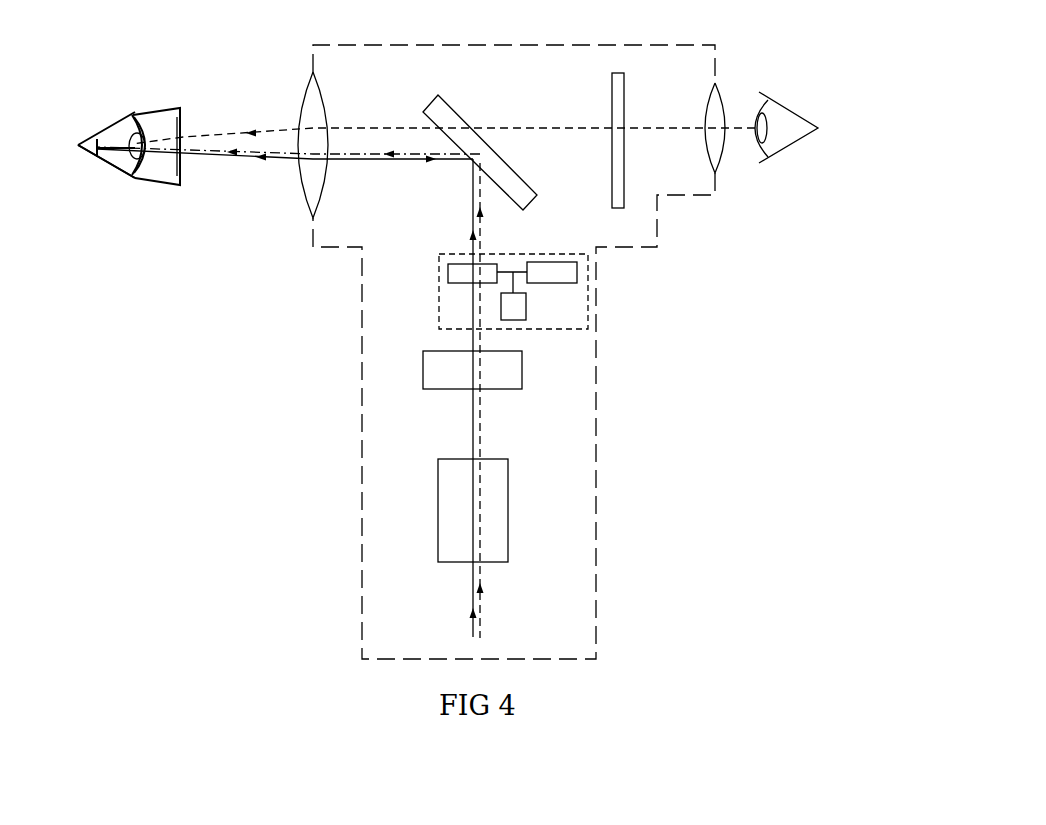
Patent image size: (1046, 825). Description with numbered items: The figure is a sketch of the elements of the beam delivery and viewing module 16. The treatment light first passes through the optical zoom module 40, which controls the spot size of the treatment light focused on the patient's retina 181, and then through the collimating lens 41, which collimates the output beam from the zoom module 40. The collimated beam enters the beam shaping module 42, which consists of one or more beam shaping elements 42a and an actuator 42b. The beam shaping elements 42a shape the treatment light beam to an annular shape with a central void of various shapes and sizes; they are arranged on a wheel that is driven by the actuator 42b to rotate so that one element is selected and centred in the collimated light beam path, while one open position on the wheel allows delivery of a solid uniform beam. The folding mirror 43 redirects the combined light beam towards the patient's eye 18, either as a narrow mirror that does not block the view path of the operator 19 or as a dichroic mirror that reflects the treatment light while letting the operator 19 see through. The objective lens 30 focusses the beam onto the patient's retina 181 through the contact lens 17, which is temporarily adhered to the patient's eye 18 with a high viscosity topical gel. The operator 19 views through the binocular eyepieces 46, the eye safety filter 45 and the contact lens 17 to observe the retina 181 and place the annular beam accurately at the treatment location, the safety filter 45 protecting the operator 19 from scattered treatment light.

The beam delivery and viewing module 16 is at (376, 460).
The contact lens 17 is at (187, 113).
The patient's eye 18 is at (110, 132).
The patient's retina 181 is at (107, 180).
The operator 19 is at (790, 157).
The objective lens 30 is at (320, 85).
The optical zoom module 40 is at (508, 548).
The collimating lens 41 is at (522, 373).
The beam shaping module 42 is at (608, 314).
The beam shaping element 42a is at (577, 268).
The actuator 42b is at (526, 302).
The folding mirror 43 is at (453, 110).
The eye safety filter 45 is at (625, 92).
The binocular eyepieces 46 is at (723, 97).